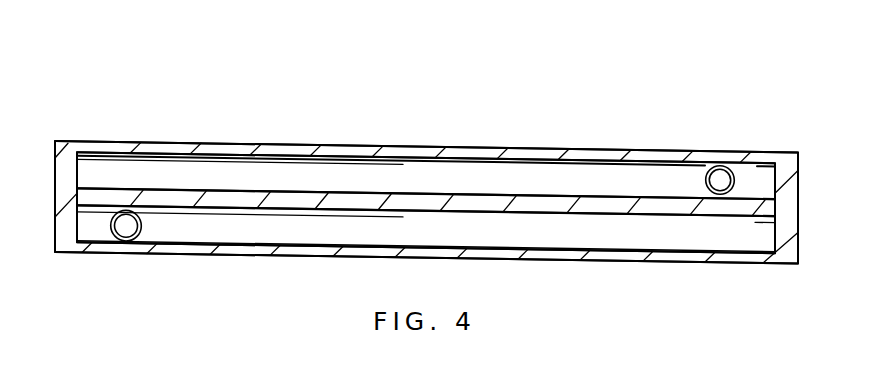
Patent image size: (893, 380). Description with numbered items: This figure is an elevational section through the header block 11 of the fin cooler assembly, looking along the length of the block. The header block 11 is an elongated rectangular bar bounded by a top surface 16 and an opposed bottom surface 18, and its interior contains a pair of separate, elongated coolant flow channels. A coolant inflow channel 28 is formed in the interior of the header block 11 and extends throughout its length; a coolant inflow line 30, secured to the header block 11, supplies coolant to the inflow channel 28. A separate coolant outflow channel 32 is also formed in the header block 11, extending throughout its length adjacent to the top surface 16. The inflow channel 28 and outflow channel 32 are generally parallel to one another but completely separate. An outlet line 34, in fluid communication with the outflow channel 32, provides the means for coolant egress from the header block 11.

The header block 11 is at (250, 135).
The top surface 16 is at (585, 148).
The bottom surface 18 is at (631, 262).
The coolant inflow channel 28 is at (470, 240).
The coolant inflow line 30 is at (114, 243).
The coolant outflow channel 32 is at (470, 188).
The outlet line 34 is at (731, 170).